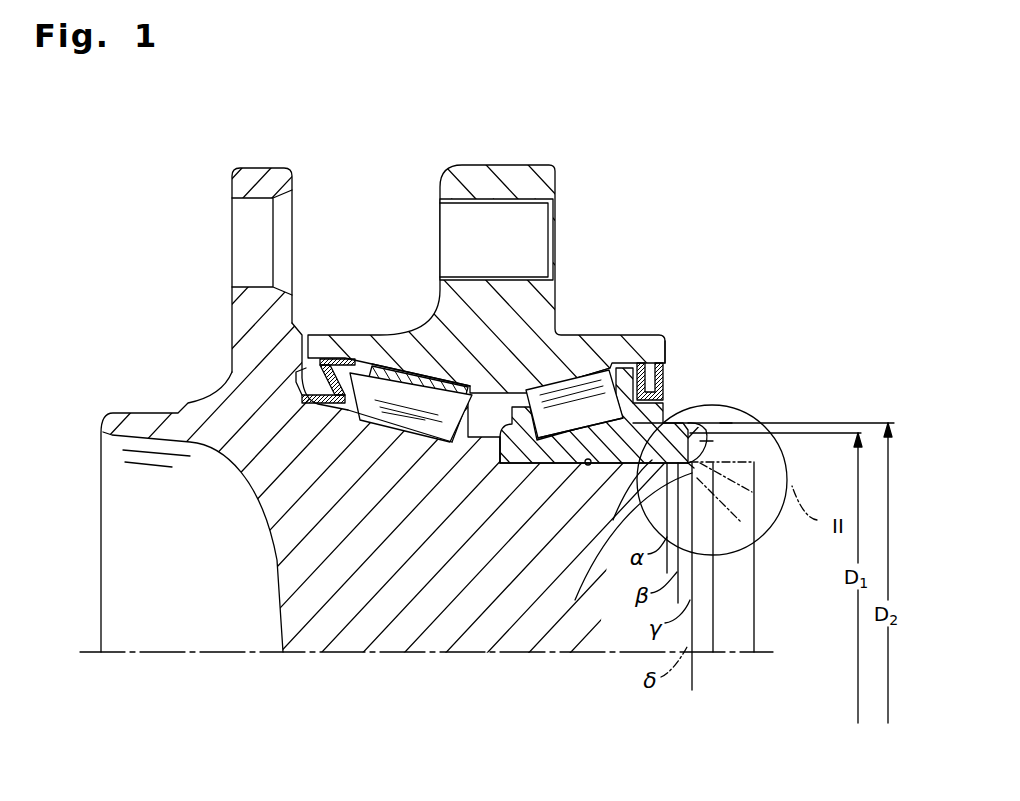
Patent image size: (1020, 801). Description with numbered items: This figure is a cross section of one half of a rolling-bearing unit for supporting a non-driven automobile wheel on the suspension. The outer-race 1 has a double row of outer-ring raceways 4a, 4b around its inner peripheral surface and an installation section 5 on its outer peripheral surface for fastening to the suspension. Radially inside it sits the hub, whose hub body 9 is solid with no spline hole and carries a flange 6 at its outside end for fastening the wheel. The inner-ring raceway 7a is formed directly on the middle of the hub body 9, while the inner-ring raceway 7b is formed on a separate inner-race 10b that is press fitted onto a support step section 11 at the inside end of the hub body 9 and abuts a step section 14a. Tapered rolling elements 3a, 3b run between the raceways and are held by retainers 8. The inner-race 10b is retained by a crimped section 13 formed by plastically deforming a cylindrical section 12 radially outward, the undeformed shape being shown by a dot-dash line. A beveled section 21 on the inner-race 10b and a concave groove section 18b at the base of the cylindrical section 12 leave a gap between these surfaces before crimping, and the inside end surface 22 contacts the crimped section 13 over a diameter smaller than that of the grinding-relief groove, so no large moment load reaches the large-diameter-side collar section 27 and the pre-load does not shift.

The outer-race 1 is at (430, 312).
The rolling element 3a is at (413, 385).
The rolling element 3b is at (575, 398).
The outer-ring raceway 4a is at (418, 364).
The outer-ring raceway 4b is at (548, 378).
The installation section 5 is at (497, 176).
The flange 6 is at (253, 176).
The inner-ring raceway 7a is at (408, 440).
The inner-ring raceway 7b is at (562, 438).
The retainer 8 is at (342, 360).
The hub body 9 is at (222, 432).
The inner-race 10b is at (658, 405).
The support step section 11 is at (588, 465).
The cylindrical section 12 is at (752, 543).
The crimped section 13 is at (708, 441).
The step section 14a is at (505, 460).
The concave groove section 18b is at (613, 520).
The beveled section 21 is at (726, 423).
The inside end surface 22 is at (694, 466).
The large-diameter-side collar section 27 is at (668, 398).